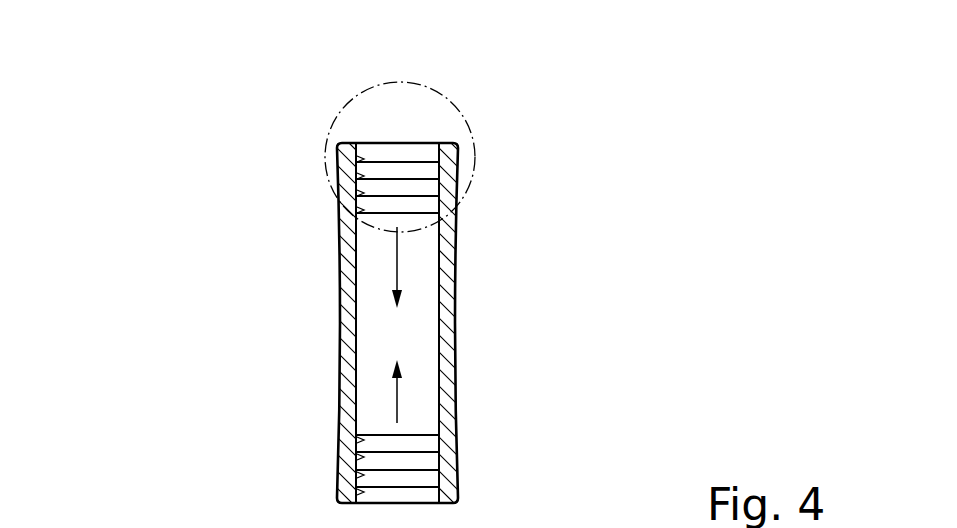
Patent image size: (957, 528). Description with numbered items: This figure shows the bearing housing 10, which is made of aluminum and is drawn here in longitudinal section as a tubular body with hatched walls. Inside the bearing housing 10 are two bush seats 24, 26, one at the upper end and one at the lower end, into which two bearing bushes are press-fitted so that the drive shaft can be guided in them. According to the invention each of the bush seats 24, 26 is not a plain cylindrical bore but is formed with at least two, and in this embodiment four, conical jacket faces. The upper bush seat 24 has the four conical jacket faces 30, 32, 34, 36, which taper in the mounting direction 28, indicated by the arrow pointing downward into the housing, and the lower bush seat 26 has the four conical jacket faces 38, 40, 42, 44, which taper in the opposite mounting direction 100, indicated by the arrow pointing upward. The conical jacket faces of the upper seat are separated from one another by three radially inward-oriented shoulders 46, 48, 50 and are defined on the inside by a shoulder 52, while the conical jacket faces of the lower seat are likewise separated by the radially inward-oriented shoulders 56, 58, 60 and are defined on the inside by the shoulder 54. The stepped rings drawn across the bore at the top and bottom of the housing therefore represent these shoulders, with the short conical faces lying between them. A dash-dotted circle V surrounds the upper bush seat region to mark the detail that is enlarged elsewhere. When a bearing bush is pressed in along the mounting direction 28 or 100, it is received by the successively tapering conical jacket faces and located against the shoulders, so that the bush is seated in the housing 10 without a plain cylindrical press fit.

The bearing housing 10 is at (335, 283).
The bush seat 24 is at (408, 152).
The bush seat 26 is at (387, 493).
The mounting direction 28 is at (397, 263).
The conical jacket face 30 is at (337, 148).
The conical jacket face 32 is at (356, 165).
The conical jacket face 34 is at (356, 184).
The conical jacket face 36 is at (356, 204).
The conical jacket face 38 is at (358, 435).
The conical jacket face 40 is at (357, 452).
The conical jacket face 42 is at (355, 470).
The conical jacket face 44 is at (353, 487).
The radially inward-oriented shoulder 46 is at (439, 160).
The radially inward-oriented shoulder 48 is at (439, 178).
The radially inward-oriented shoulder 50 is at (439, 195).
The shoulder 52 is at (439, 213).
The shoulder 54 is at (440, 433).
The radially inward-oriented shoulder 56 is at (440, 452).
The radially inward-oriented shoulder 58 is at (440, 470).
The radially inward-oriented shoulder 60 is at (440, 487).
The mounting direction 100 is at (397, 400).
The detail region V is at (468, 127).